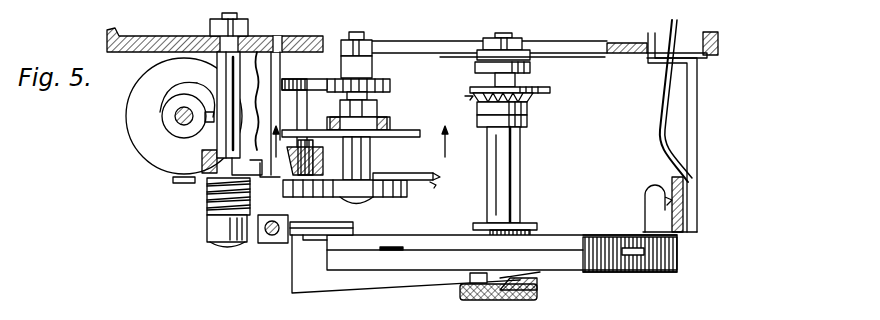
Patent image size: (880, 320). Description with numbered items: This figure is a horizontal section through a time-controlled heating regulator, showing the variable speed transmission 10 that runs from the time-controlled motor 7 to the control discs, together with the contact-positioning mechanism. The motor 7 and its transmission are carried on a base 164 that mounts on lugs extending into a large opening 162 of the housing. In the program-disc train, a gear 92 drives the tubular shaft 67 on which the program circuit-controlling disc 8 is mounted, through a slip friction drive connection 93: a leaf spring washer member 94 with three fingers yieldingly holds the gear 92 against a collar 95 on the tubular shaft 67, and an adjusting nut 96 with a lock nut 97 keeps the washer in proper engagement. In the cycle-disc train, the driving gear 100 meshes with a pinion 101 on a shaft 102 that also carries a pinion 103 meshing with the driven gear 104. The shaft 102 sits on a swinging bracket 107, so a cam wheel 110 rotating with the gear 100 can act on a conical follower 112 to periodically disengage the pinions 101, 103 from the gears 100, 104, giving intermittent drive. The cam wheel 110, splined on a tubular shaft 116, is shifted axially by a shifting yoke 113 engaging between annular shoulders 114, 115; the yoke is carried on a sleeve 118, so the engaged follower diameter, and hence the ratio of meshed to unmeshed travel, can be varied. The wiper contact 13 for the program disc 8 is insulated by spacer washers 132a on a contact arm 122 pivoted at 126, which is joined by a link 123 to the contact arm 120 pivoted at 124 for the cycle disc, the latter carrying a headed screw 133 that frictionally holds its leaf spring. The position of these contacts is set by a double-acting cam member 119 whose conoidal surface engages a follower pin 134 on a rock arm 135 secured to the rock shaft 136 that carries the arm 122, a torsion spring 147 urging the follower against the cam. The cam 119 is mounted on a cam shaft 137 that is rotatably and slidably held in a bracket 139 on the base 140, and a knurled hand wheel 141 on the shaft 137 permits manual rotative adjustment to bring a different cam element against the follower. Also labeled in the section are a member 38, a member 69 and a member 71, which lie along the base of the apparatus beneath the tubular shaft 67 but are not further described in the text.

The time-controlled motor 7 is at (367, 141).
The program circuit-controlling disc 8 is at (677, 261).
The variable speed transmission 10 is at (419, 317).
The contact 13 is at (500, 278).
The bar 38 is at (677, 246).
The tubular shaft 67 is at (519, 181).
The knurled slide 69 is at (676, 268).
The knurled knob 71 is at (540, 294).
The gear 92 is at (550, 92).
The slip friction drive connection 93 is at (458, 100).
The leaf spring washer member 94 is at (527, 102).
The collar 95 is at (527, 90).
The adjusting nut 96 is at (528, 109).
The lock nut 97 is at (513, 130).
The gear 100 is at (400, 80).
The pinion 101 is at (283, 80).
The shaft 102 is at (258, 60).
The pinion 103 is at (284, 200).
The gear 104 is at (393, 197).
The swinging bracket 107 is at (434, 184).
The cam wheel 110 is at (420, 135).
The conical follower 112 is at (207, 203).
The shifting yoke 113 is at (386, 123).
The annular shoulder 114 is at (383, 114).
The annular shoulder 115 is at (398, 137).
The tubular shaft 116 is at (419, 169).
The sleeve 118 is at (432, 4).
The double-acting cam member 119 is at (163, 127).
The contact arm 120 is at (280, 21).
The contact arm 122 is at (237, 243).
The link 123 is at (270, 243).
The pivot 124 is at (242, 7).
The pivot 126 is at (217, 228).
The spacer washers 132a is at (353, 229).
The headed screw 133 is at (325, 3).
The follower pin 134 is at (169, 101).
The rock arm 135 is at (185, 96).
The rock shaft 136 is at (227, 133).
The cam shaft 137 is at (160, 111).
The bracket 139 is at (138, 68).
The base 140 is at (714, 56).
The knurled hand wheel 141 is at (151, 163).
The torsion spring 147 is at (207, 187).
The opening 162 is at (606, 48).
The base 164 is at (598, 57).